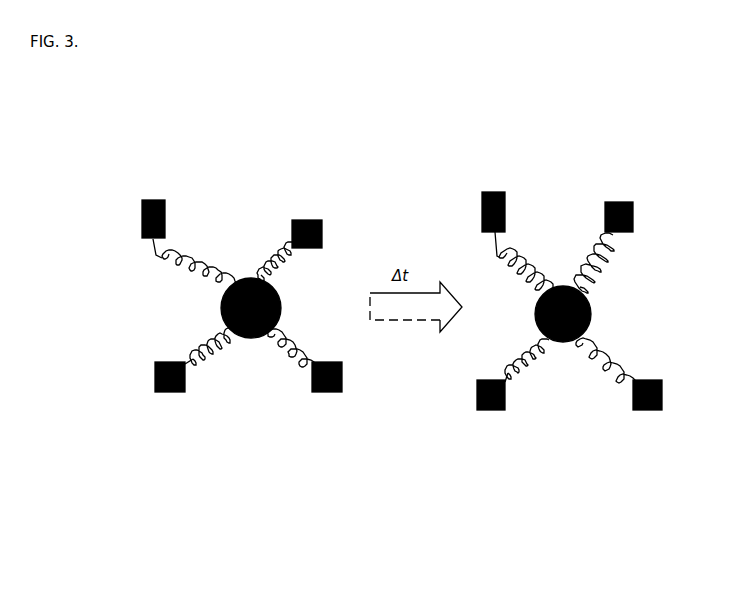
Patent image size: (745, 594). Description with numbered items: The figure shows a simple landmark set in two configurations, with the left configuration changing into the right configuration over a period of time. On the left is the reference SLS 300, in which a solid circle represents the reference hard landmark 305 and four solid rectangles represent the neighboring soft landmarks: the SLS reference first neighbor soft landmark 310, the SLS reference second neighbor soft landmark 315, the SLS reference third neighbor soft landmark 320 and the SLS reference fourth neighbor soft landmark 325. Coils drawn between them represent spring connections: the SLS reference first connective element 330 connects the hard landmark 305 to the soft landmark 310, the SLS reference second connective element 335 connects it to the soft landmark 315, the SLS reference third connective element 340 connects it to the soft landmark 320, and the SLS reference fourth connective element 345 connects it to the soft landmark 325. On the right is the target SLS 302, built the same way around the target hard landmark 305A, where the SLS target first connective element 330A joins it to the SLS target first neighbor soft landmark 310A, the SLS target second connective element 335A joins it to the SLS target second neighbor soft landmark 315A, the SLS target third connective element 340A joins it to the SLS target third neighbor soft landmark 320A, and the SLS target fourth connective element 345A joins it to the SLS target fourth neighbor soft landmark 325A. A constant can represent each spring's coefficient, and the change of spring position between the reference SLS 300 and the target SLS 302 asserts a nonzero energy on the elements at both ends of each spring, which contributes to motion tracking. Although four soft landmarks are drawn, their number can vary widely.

The reference SLS 300 is at (203, 477).
The target SLS 302 is at (563, 470).
The reference hard landmark 305 is at (219, 303).
The SLS reference first neighbor soft landmark 310 is at (315, 212).
The SLS reference second neighbor soft landmark 315 is at (163, 403).
The SLS reference third neighbor soft landmark 320 is at (140, 207).
The SLS reference fourth neighbor soft landmark 325 is at (327, 393).
The SLS reference first connective element 330 is at (270, 242).
The SLS reference second connective element 335 is at (212, 365).
The SLS reference third connective element 340 is at (198, 243).
The SLS reference fourth connective element 345 is at (277, 365).
The target hard landmark 305A is at (593, 312).
The SLS target first neighbor soft landmark 310A is at (618, 192).
The SLS target second neighbor soft landmark 315A is at (483, 423).
The SLS target third neighbor soft landmark 320A is at (490, 182).
The SLS target fourth neighbor soft landmark 325A is at (672, 400).
The SLS target first connective element 330A is at (583, 250).
The SLS target second connective element 335A is at (540, 362).
The SLS target third connective element 340A is at (527, 252).
The SLS target fourth connective element 345A is at (597, 372).